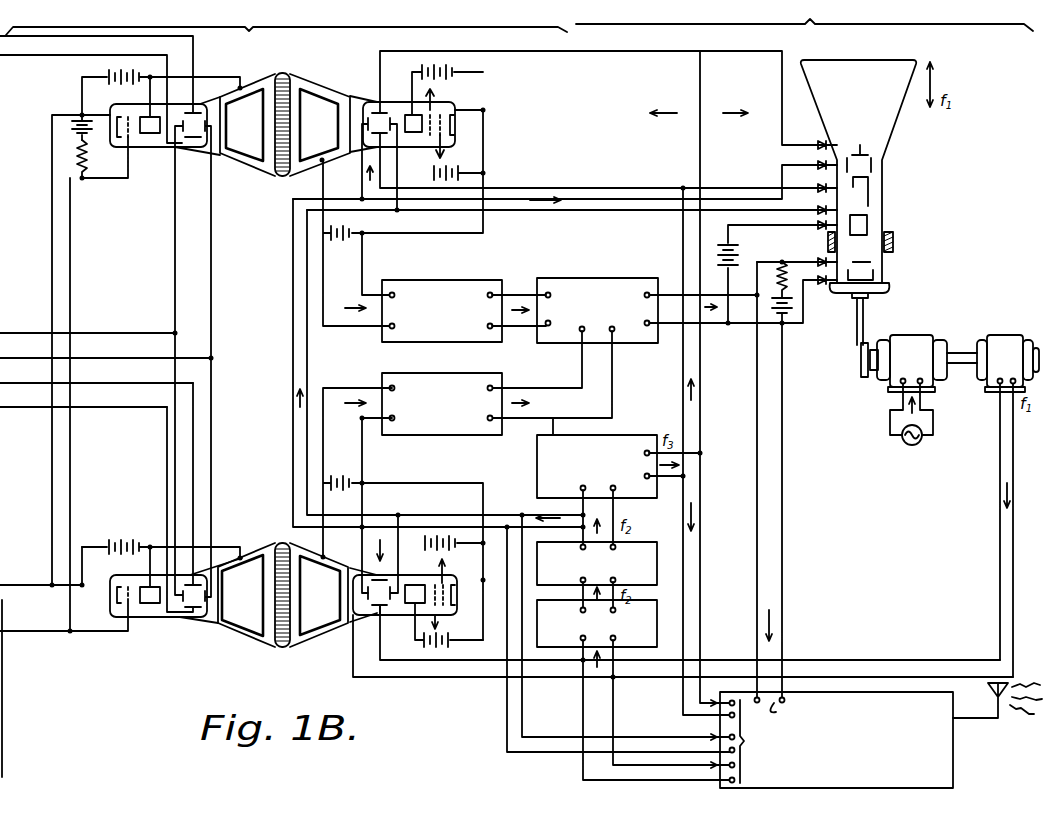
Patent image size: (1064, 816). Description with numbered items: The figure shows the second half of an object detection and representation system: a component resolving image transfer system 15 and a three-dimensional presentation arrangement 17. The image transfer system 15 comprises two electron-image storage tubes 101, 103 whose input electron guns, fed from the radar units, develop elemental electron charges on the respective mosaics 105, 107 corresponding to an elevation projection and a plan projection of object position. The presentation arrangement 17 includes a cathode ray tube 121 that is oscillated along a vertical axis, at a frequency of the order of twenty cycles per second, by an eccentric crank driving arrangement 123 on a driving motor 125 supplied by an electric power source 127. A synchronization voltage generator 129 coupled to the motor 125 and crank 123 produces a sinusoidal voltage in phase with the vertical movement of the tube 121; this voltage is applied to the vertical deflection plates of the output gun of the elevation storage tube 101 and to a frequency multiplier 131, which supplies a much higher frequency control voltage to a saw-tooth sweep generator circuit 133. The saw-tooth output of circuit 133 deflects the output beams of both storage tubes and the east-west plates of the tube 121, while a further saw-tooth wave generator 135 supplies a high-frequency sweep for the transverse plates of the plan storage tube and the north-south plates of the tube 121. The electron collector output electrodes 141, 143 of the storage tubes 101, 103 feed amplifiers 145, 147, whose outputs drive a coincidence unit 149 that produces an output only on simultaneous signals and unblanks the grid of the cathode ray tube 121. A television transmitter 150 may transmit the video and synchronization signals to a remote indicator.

The component resolving image transfer system 15 is at (286, 18).
The three-dimensional presentation arrangement 17 is at (804, 15).
The electron-image storage tube 101 is at (238, 632).
The electron-image storage tube 103 is at (248, 172).
The mosaic 105 is at (274, 548).
The mosaic 107 is at (273, 76).
The cathode ray tube 121 is at (892, 137).
The eccentric crank driving arrangement 123 is at (868, 343).
The driving motor 125 is at (924, 336).
The electric power source 127 is at (913, 446).
The synchronization voltage generator 129 is at (1000, 335).
The frequency multiplier 131 is at (658, 618).
The saw-tooth sweep generator circuit 133 is at (658, 557).
The saw-tooth wave generator 135 is at (537, 478).
The electron collector output electrode 141 is at (318, 633).
The electron collector output electrode 143 is at (336, 68).
The amplifier 145 is at (456, 363).
The amplifier 147 is at (456, 271).
The coincidence unit 149 is at (597, 271).
The television transmitter 150 is at (954, 761).